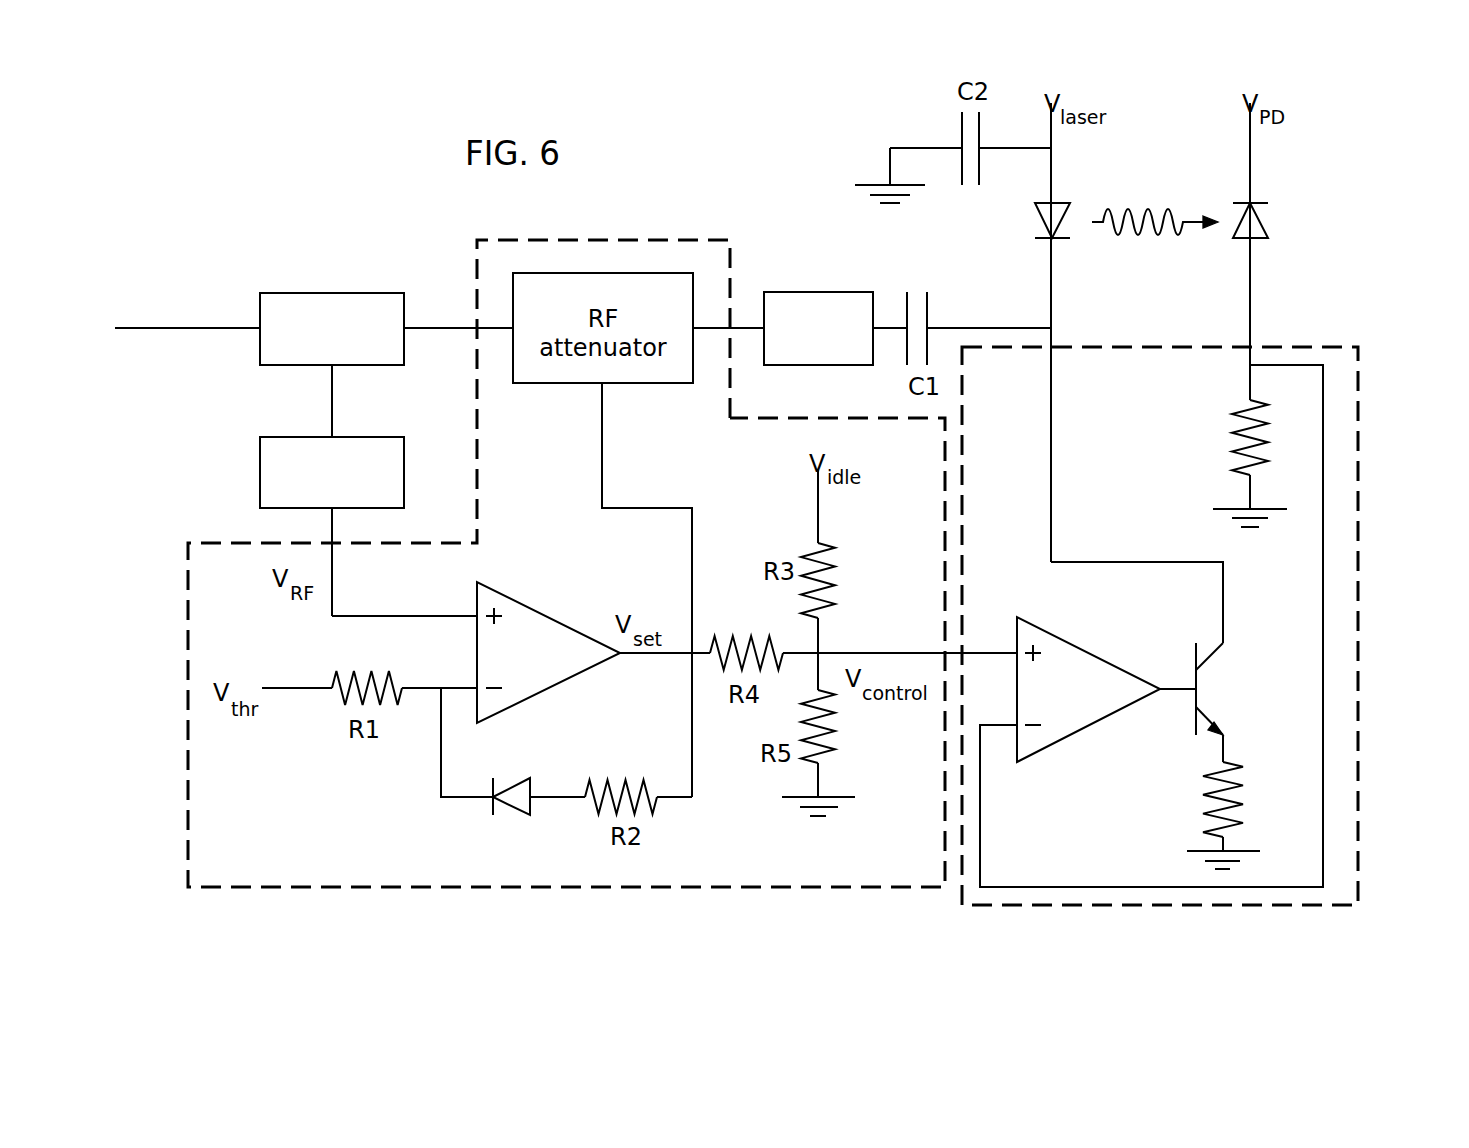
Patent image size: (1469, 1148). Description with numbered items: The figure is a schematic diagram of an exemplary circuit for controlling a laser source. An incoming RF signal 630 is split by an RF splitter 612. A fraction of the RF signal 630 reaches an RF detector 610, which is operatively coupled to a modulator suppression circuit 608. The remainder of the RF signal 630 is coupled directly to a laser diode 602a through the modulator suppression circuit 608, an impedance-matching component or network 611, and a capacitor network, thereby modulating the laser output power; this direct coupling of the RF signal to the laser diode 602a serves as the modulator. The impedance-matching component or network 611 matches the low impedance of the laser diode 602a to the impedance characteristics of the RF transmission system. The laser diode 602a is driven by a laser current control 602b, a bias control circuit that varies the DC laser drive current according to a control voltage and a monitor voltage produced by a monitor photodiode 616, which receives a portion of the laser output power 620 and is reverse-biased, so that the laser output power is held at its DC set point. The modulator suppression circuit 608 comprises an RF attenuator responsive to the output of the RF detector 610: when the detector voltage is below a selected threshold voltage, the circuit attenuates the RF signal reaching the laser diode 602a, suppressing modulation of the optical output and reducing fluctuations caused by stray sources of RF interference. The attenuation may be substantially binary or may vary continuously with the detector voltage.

The incoming RF signal 630 is at (162, 328).
The RF splitter 612 is at (355, 346).
The RF detector 610 is at (355, 490).
The modulator suppression circuit 608 is at (250, 542).
The impedance-matching component or network 611 is at (840, 346).
The laser diode 602a is at (1047, 220).
The laser output power 620 is at (1162, 185).
The monitor photodiode 616 is at (1250, 225).
The laser current control 602b is at (1358, 782).